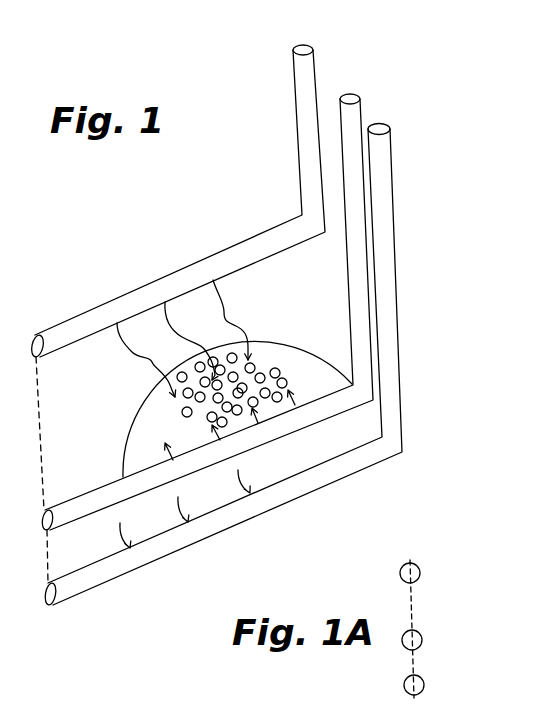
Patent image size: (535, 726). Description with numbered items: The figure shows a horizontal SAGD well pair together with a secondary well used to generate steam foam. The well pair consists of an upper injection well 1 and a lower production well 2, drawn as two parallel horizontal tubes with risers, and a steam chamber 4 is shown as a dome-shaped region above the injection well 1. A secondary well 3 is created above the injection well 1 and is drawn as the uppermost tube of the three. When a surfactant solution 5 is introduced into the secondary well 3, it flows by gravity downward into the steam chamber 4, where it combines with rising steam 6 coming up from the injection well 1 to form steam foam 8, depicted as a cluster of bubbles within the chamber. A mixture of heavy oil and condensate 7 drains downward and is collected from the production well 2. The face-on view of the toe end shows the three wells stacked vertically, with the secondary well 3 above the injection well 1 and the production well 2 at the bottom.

In FIG. 1, the injection well 1 is at (360, 105).
In FIG. 1A, the injection well 1 is at (422, 641).
In FIG. 1, the production well 2 is at (394, 163).
In FIG. 1A, the production well 2 is at (424, 686).
In FIG. 1, the secondary well 3 is at (294, 93).
In FIG. 1A, the secondary well 3 is at (420, 575).
In FIG. 1, the steam chamber 4 is at (127, 430).
In FIG. 1, the surfactant solution 5 is at (184, 338).
In FIG. 1, the rising steam 6 is at (230, 425).
In FIG. 1, the mixture of heavy oil and condensate 7 is at (185, 509).
In FIG. 1, the steam foam 8 is at (236, 388).